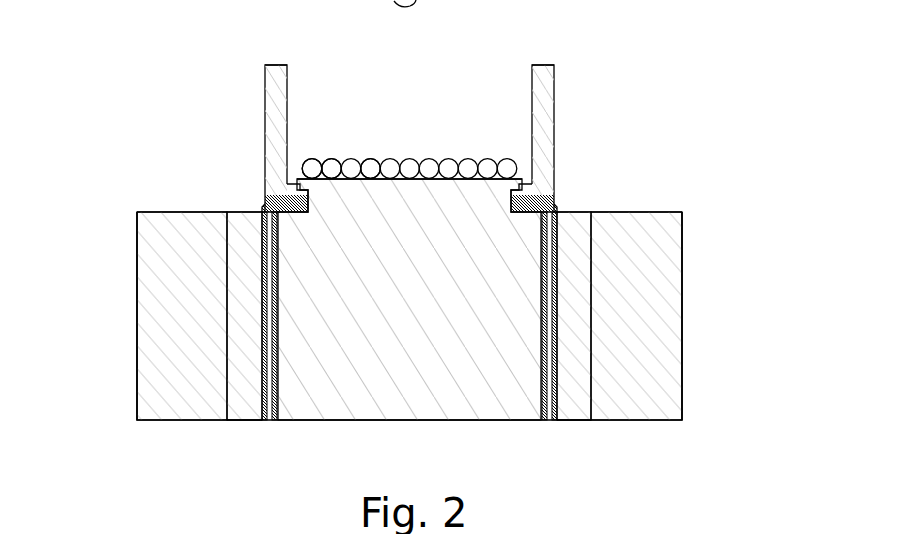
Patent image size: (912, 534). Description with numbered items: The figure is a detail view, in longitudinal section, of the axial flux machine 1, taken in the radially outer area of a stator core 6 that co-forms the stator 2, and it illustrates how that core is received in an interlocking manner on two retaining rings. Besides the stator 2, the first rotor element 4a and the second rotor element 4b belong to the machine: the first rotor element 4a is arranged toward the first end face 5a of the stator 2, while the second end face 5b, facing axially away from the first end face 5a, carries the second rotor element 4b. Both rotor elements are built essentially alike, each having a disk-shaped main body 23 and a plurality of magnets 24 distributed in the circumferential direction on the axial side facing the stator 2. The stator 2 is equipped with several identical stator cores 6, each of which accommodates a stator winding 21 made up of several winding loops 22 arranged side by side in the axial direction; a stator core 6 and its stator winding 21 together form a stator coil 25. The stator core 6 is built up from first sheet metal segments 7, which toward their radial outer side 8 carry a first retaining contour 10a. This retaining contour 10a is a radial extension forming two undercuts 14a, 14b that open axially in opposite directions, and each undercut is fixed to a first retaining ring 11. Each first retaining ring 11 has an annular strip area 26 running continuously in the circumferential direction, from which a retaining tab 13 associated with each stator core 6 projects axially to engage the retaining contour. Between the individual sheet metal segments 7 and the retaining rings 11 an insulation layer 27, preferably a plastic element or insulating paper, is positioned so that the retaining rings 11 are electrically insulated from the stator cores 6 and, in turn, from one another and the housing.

The axial flux machine 1 is at (136, 124).
The stator 2 is at (304, 66).
The first rotor element 4a is at (175, 313).
The second rotor element 4b is at (653, 281).
The first end face 5a is at (262, 337).
The second end face 5b is at (560, 292).
The stator core 6 is at (409, 328).
The first sheet metal segment 7 is at (405, 375).
The radial outer side 8 is at (381, 147).
The first retaining contour 10a is at (383, 193).
The first retaining ring 11 is at (264, 141).
The retaining tab 13 is at (266, 174).
The first undercut 14a is at (303, 181).
The second undercut 14b is at (515, 183).
The stator winding 21 is at (441, 153).
The winding loop 22 is at (338, 153).
The disk-shaped main body 23 is at (152, 258).
The magnet 24 is at (250, 405).
The stator coil 25 is at (505, 108).
The strip area 26 is at (264, 100).
The insulation layer 27 is at (267, 203).